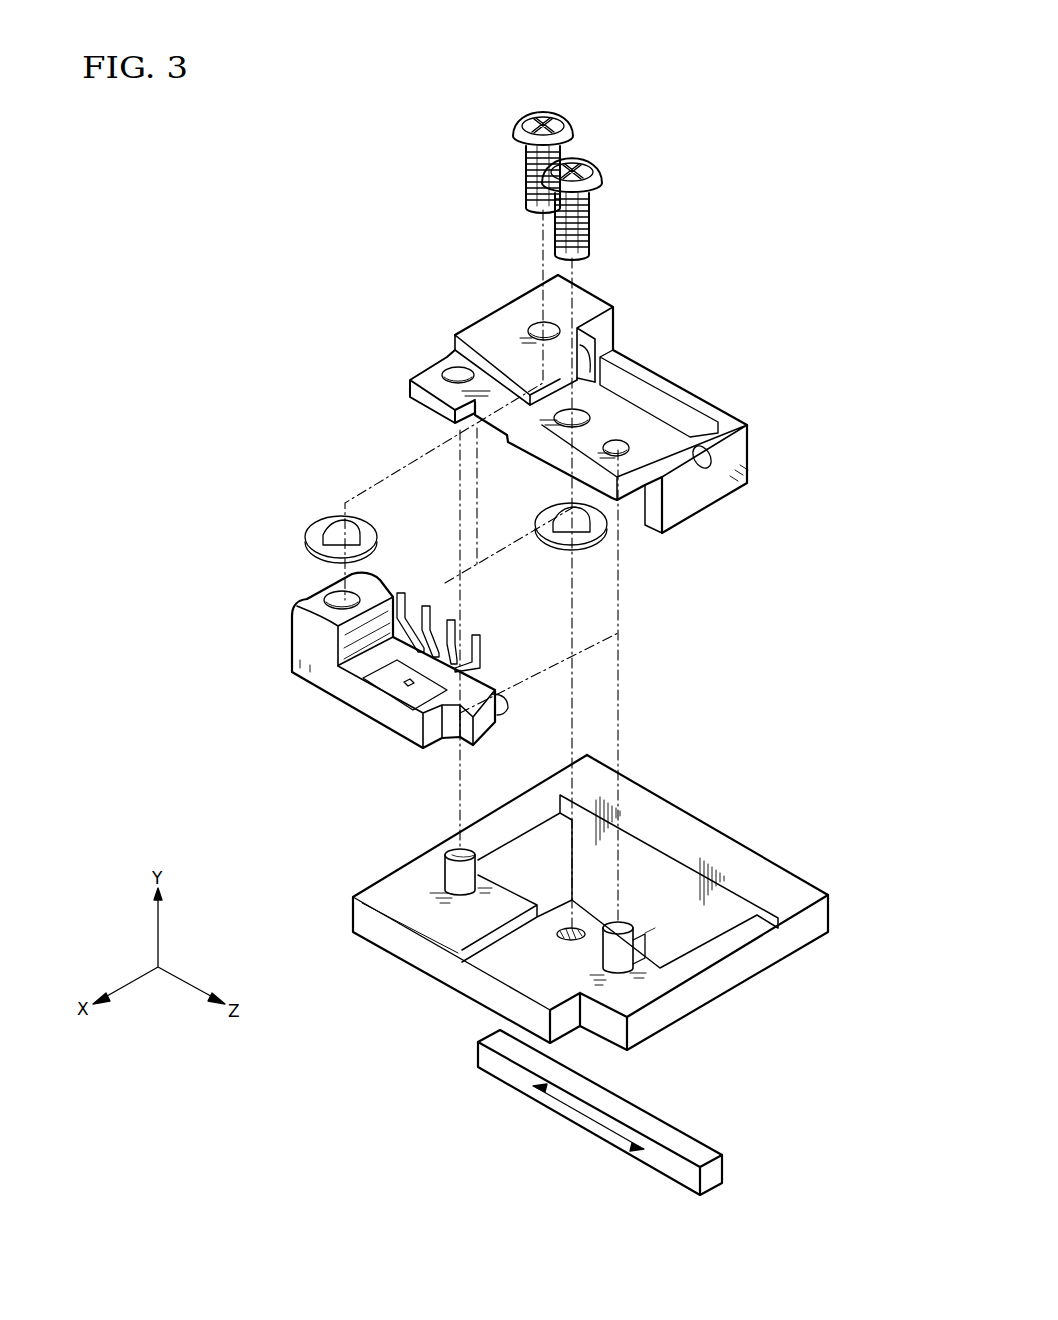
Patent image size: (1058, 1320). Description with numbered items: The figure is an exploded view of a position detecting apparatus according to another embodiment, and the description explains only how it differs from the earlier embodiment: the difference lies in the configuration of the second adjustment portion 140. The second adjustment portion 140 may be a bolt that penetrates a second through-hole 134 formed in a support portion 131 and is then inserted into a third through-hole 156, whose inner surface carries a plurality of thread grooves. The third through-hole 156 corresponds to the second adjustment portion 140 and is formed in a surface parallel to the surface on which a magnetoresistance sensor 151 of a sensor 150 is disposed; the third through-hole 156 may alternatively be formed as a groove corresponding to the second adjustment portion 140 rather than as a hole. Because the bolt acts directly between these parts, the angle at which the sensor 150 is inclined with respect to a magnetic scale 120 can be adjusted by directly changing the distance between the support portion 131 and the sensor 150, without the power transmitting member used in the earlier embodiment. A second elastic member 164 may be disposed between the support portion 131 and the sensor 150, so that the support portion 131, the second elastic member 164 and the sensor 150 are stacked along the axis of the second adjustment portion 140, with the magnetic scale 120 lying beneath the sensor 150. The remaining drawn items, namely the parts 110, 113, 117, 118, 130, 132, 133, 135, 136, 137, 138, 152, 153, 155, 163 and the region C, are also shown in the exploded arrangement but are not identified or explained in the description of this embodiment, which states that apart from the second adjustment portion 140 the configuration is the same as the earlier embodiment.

The base 110 is at (684, 975).
The hole 113 is at (575, 942).
The pin 117 is at (443, 868).
The pin 118 is at (626, 958).
The magnetic scale 120 is at (498, 1070).
The bracket assembly 130 is at (561, 381).
The support portion 131 is at (673, 372).
The screw 132 is at (590, 217).
The hole 133 is at (553, 416).
The second through-hole 134 is at (533, 330).
The hole 135 is at (700, 462).
The slot 136 is at (579, 358).
The hole 137 is at (452, 375).
The hole 138 is at (620, 444).
The second adjustment portion 140 is at (527, 162).
The sensor 150 is at (408, 679).
The magnetoresistance sensor 151 is at (393, 689).
The module body 152 is at (413, 738).
The lead pins 153 is at (482, 642).
The boss 155 is at (508, 699).
The third through-hole 156 is at (328, 597).
The washer 163 is at (543, 533).
The second elastic member 164 is at (313, 533).
The pocket floor C is at (645, 933).